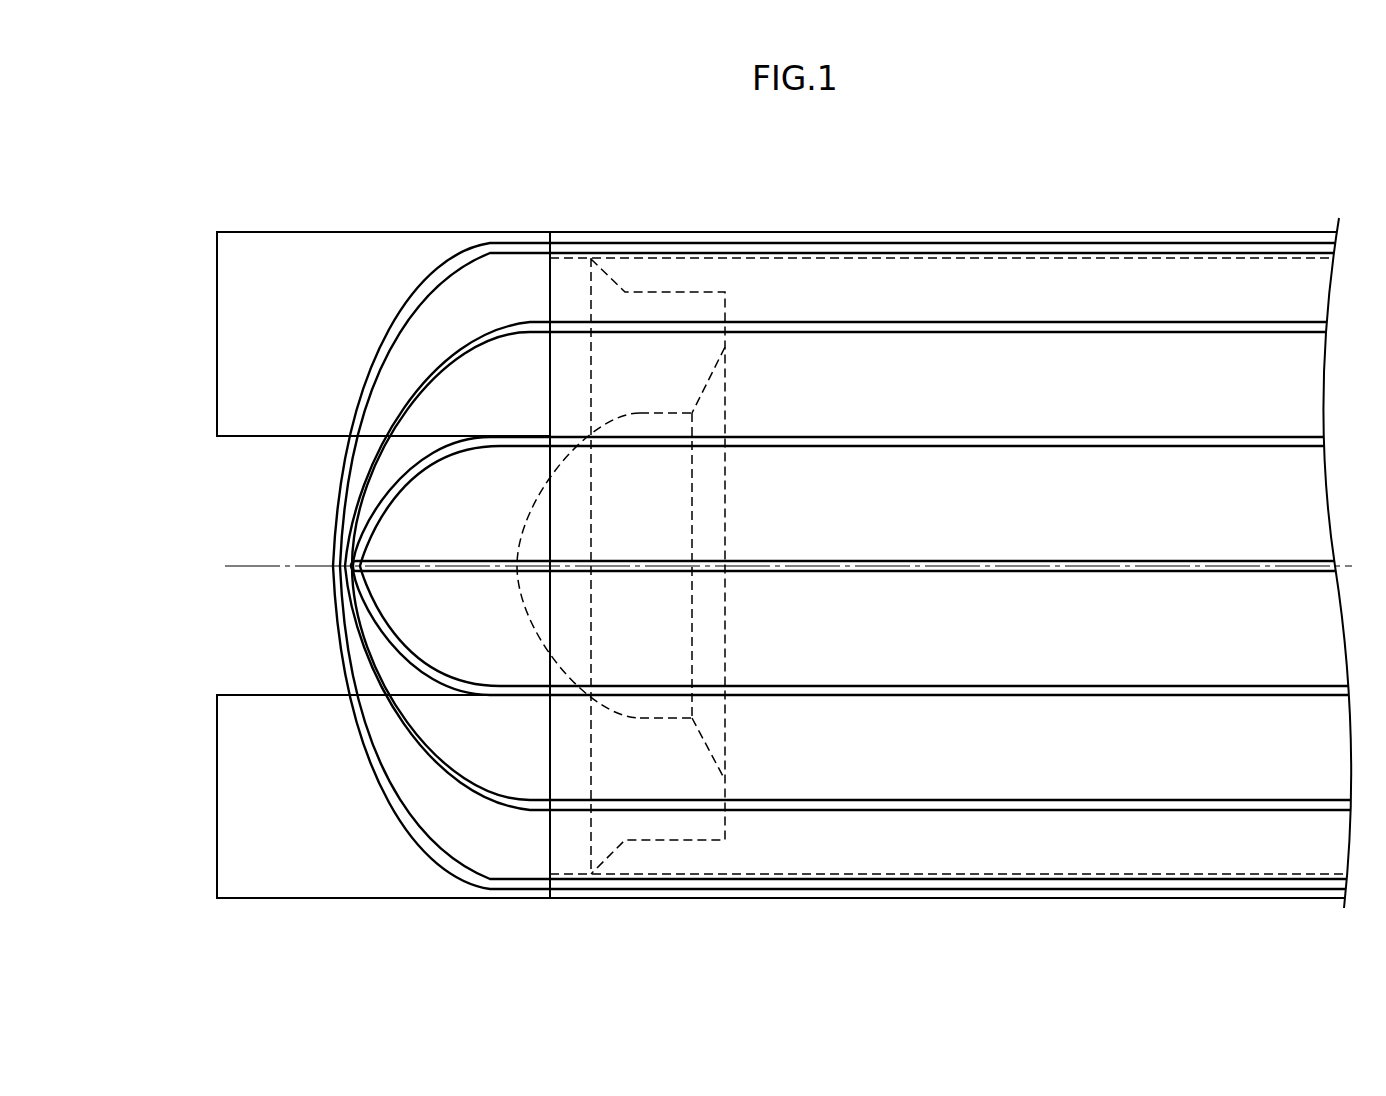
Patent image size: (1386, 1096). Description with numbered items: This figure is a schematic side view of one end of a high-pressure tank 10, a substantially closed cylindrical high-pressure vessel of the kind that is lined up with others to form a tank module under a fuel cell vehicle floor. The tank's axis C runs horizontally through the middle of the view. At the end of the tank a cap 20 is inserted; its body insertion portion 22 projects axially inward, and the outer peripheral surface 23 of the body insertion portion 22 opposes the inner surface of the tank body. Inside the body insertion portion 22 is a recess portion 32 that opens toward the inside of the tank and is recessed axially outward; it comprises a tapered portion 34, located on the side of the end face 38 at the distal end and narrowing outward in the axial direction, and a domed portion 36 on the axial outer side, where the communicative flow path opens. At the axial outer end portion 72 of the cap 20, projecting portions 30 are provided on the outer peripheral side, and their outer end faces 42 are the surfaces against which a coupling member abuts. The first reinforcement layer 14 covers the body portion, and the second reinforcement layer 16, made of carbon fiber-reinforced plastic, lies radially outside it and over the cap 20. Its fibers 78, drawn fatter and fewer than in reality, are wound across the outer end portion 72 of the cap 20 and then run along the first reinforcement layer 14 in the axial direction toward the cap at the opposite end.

The high-pressure tank 10 is at (955, 193).
The first reinforcement layer 14 is at (1132, 287).
The second reinforcement layer 16 is at (766, 566).
The cap 20 is at (468, 223).
The body insertion portion 22 is at (728, 300).
The outer peripheral surface 23 is at (671, 291).
The projecting portion 30 is at (325, 248).
The recess portion 32 is at (652, 420).
The tapered portion 34 is at (707, 392).
The domed portion 36 is at (665, 536).
The end face 38 is at (727, 338).
The outer end face 42 is at (217, 335).
The outer end portion 72 is at (390, 373).
The fiber 78 is at (766, 566).
The axis C is at (975, 562).